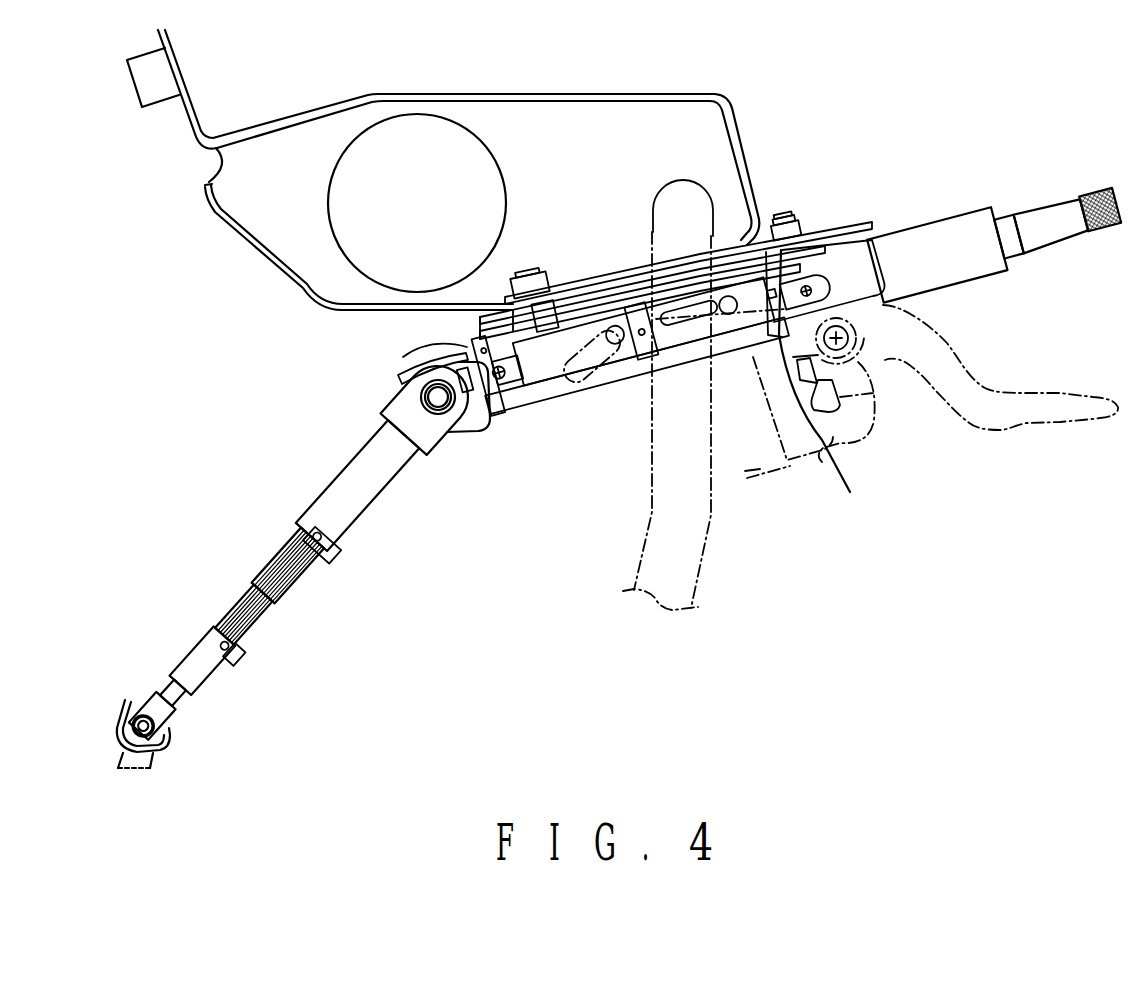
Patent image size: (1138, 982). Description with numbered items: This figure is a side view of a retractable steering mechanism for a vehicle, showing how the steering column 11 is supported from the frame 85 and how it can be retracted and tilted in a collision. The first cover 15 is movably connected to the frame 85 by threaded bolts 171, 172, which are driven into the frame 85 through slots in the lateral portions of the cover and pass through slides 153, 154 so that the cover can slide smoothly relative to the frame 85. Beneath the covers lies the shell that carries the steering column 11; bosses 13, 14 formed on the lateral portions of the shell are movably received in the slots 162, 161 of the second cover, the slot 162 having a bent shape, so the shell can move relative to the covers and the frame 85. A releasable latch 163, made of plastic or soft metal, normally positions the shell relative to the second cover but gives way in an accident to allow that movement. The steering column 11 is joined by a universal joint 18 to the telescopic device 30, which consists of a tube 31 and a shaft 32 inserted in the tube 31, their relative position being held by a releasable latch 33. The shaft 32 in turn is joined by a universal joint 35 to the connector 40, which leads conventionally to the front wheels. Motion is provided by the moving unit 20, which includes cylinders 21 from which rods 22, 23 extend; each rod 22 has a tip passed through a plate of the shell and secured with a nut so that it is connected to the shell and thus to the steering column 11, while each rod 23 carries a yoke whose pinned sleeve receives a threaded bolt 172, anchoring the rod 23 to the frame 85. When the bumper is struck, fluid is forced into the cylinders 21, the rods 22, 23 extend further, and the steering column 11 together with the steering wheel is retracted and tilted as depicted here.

The steering column 11 is at (972, 220).
The boss 13 is at (615, 332).
The boss 14 is at (726, 303).
The first cover 15 is at (856, 222).
The universal joint 18 is at (368, 412).
The moving unit 20 is at (634, 372).
The cylinder 21 is at (757, 320).
The rod 22 is at (518, 390).
The rod 23 is at (850, 492).
The telescopic device 30 is at (310, 592).
The tube 31 is at (323, 480).
The shaft 32 is at (290, 535).
The releasable latch 33 is at (336, 552).
The universal joint 35 is at (140, 672).
The connector 40 is at (163, 753).
The frame 85 is at (750, 137).
The slide 153 is at (487, 320).
The slide 154 is at (866, 238).
The slot 161 is at (701, 326).
The slot 162 is at (582, 383).
The releasable latch 163 is at (403, 357).
The threaded bolt 171 is at (522, 268).
The threaded bolt 172 is at (788, 212).